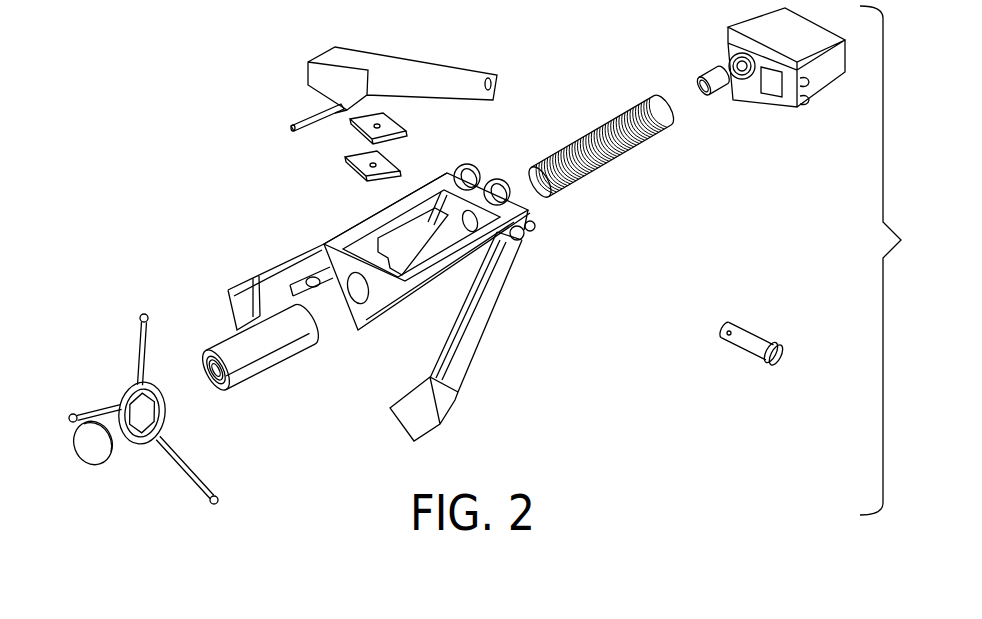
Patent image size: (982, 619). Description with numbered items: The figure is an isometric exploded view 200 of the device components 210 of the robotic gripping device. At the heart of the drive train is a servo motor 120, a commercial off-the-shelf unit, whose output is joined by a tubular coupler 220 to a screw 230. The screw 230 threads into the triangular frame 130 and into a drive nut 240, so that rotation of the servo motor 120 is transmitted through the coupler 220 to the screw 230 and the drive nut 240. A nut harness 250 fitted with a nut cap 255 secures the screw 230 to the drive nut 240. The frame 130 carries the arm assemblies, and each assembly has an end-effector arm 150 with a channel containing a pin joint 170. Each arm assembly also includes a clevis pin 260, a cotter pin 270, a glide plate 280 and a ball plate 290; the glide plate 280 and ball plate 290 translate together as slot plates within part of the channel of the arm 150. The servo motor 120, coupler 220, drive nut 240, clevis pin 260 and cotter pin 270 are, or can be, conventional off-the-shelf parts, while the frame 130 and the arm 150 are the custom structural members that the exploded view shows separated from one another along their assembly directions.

The isometric exploded view 200 is at (129, 88).
The device components 210 is at (736, 260).
The servo motor 120 is at (784, 103).
The triangular frame 130 is at (348, 323).
The end-effector arm 150 is at (490, 325).
The pin joint 170 is at (306, 280).
The tubular coupler 220 is at (705, 72).
The screw 230 is at (627, 153).
The drive nut 240 is at (250, 382).
The nut harness 250 is at (120, 393).
The nut cap 255 is at (102, 463).
The clevis pin 260 is at (718, 327).
The cotter pin 270 is at (293, 128).
The glide plate 280 is at (402, 127).
The ball plate 290 is at (349, 167).